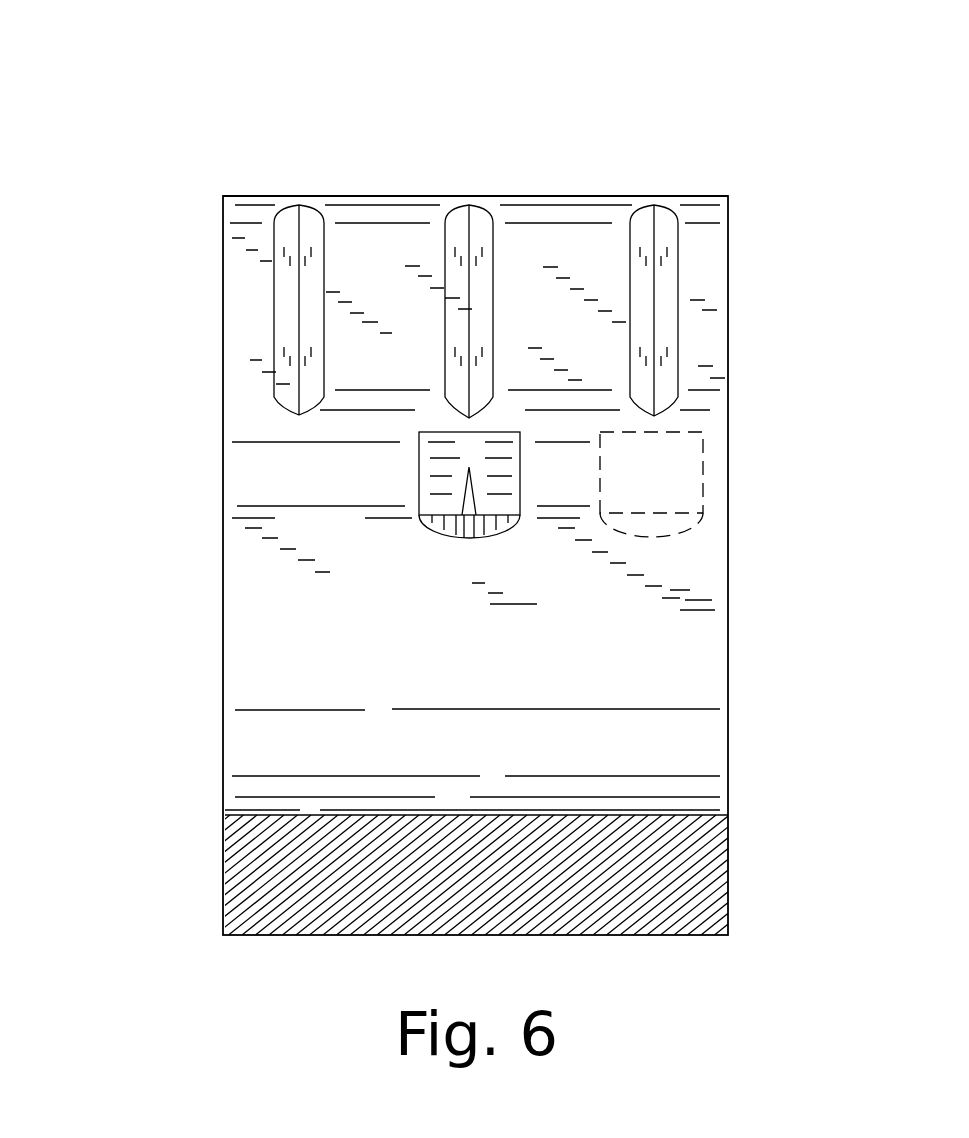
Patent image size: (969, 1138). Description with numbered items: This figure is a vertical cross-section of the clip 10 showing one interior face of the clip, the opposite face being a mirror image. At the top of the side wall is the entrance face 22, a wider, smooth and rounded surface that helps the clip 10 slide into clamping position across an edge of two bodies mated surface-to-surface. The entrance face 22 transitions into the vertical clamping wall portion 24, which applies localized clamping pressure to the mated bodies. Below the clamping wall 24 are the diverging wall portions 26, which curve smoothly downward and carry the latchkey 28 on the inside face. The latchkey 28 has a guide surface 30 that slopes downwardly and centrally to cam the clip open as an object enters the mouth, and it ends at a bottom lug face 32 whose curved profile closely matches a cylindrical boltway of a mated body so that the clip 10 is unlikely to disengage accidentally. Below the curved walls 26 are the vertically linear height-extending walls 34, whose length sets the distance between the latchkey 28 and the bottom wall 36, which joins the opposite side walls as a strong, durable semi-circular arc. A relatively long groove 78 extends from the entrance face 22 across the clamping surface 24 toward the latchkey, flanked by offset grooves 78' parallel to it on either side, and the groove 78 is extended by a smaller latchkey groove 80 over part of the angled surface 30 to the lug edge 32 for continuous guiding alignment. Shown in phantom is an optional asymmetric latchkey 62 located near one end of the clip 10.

The clip 10 is at (137, 121).
The entrance face 22 is at (722, 197).
The clamping wall portions 24 is at (710, 273).
The diverging wall portions 26 is at (263, 431).
The latchkey 28 is at (420, 490).
The guide surface 30 is at (420, 455).
The bottom end (lug face) 32 is at (447, 530).
The height-extending walls 34 is at (707, 567).
The bottom wall 36 is at (697, 720).
The latchkey (asymmetric) 62 is at (673, 443).
The groove 78 is at (469, 237).
The groove (offset) 78' is at (478, 235).
The latchkey groove 80 is at (467, 537).